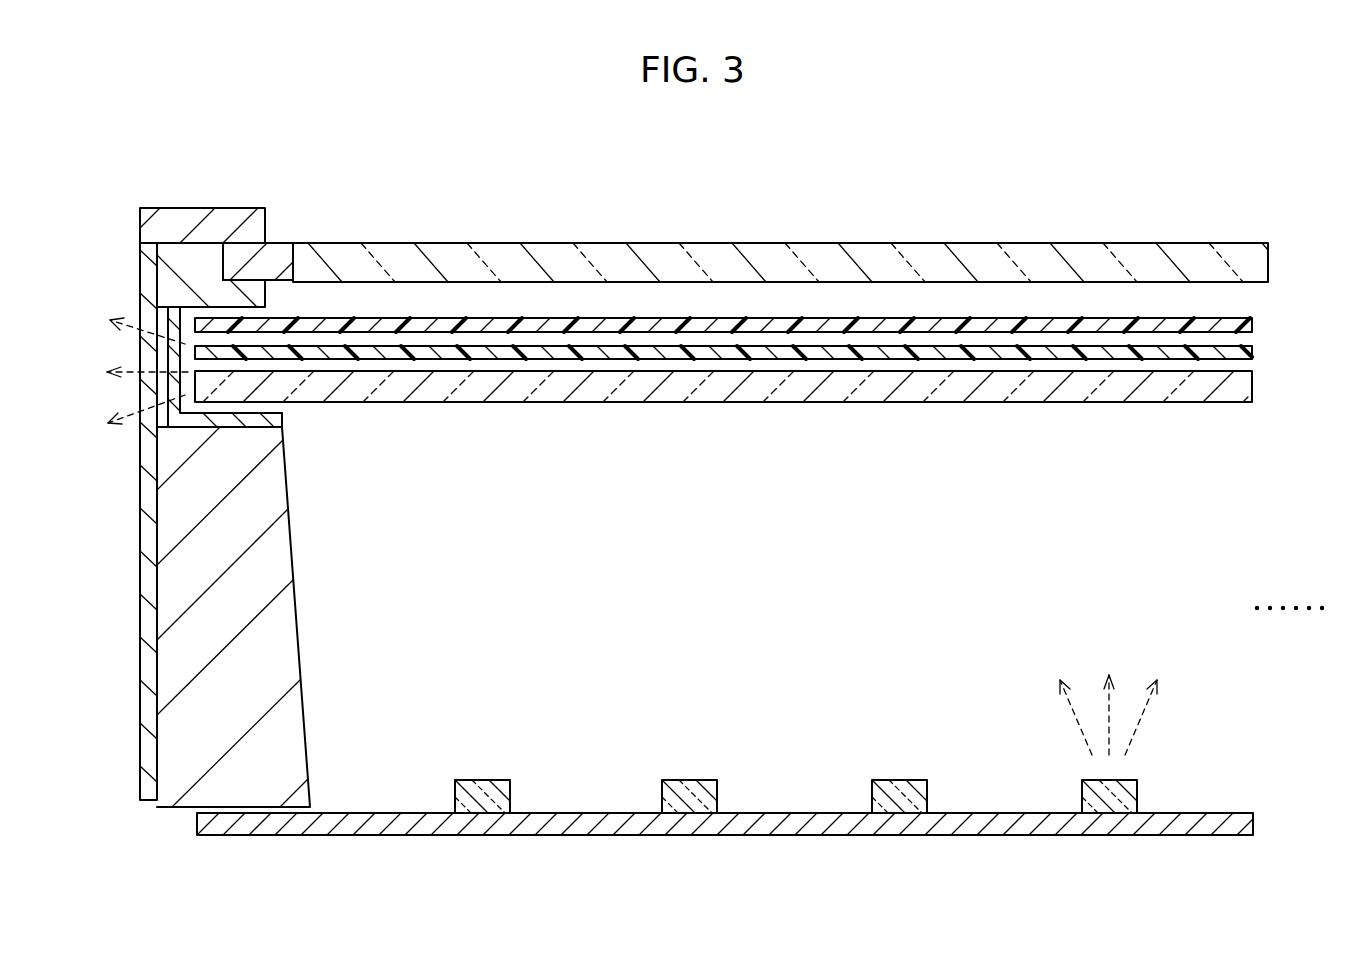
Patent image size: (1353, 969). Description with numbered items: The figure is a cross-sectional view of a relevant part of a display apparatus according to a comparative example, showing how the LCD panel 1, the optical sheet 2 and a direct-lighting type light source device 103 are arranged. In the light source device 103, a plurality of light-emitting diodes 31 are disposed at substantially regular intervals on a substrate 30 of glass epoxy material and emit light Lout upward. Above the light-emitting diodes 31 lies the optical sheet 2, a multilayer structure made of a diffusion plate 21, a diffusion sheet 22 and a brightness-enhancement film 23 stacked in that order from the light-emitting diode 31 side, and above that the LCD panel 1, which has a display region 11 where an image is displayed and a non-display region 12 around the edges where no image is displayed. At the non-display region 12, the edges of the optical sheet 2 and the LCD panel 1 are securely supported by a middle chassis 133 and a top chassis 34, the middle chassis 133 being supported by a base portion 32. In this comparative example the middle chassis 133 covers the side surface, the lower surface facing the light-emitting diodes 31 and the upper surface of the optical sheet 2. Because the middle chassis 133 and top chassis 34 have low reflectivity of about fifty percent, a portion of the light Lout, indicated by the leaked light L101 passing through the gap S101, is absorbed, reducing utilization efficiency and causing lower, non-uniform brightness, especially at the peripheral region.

The LCD panel 1 is at (745, 201).
The display region 11 is at (780, 224).
The non-display region 12 is at (283, 240).
The optical sheet 2 is at (774, 358).
The diffusion plate 21 is at (753, 387).
The diffusion sheet 22 is at (1253, 353).
The brightness-enhancement film 23 is at (1253, 325).
The substrate 30 is at (1255, 820).
The light-emitting diodes 31 is at (1155, 762).
The base portion 32 is at (287, 585).
The top chassis 34 is at (162, 218).
The light source device 103 is at (759, 763).
The middle chassis 133 is at (160, 292).
The gap S101 is at (190, 320).
The leaked light L101 is at (105, 313).
The light Lout is at (1160, 660).